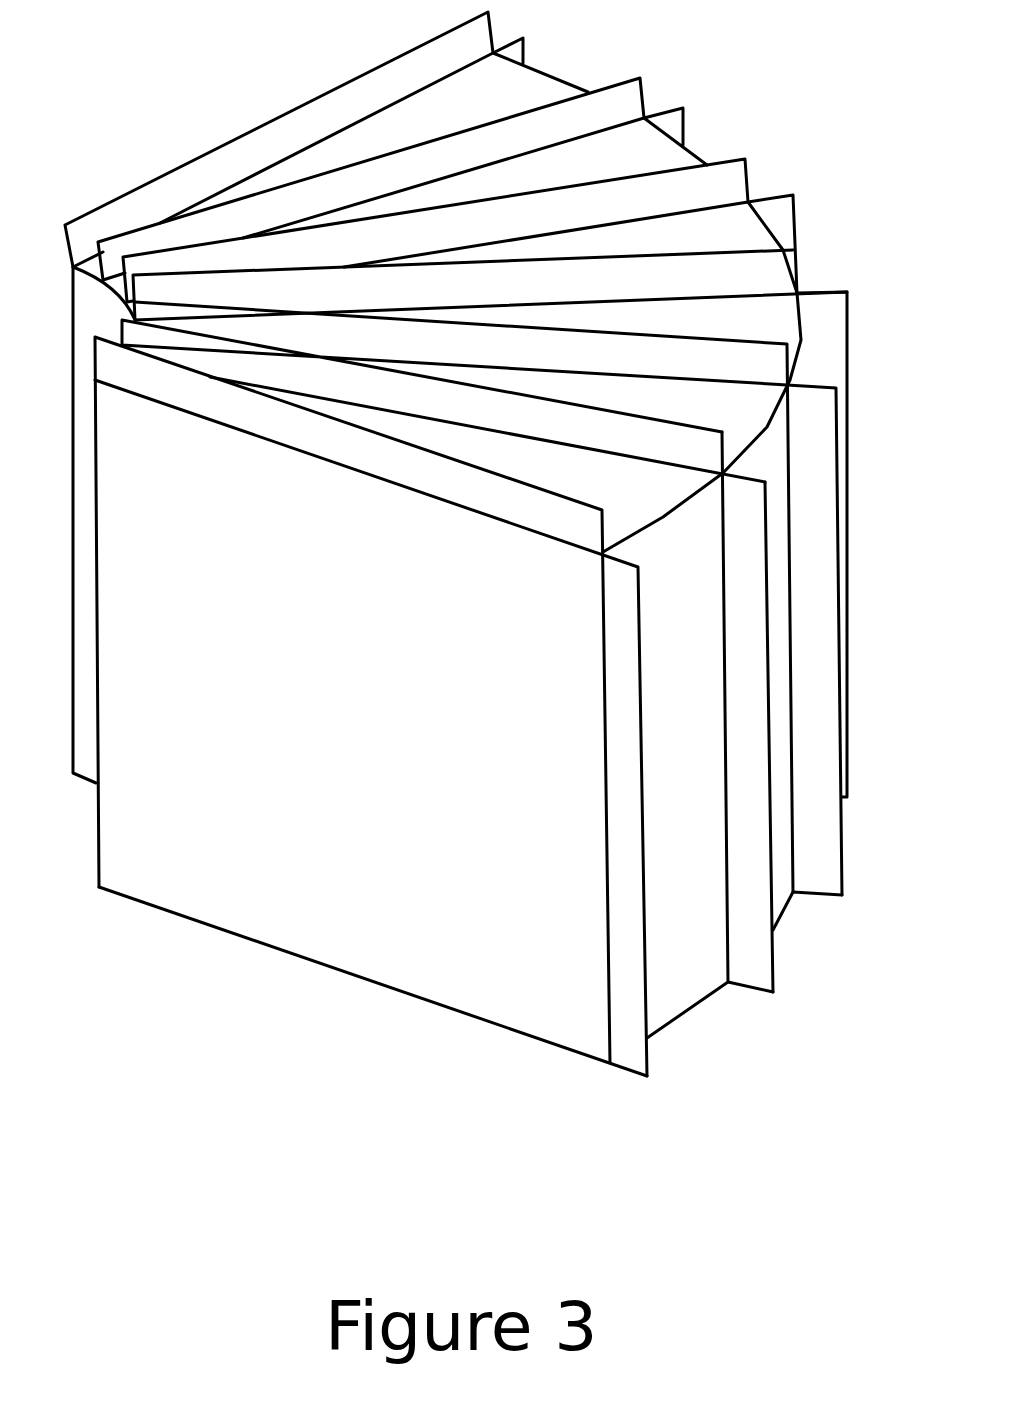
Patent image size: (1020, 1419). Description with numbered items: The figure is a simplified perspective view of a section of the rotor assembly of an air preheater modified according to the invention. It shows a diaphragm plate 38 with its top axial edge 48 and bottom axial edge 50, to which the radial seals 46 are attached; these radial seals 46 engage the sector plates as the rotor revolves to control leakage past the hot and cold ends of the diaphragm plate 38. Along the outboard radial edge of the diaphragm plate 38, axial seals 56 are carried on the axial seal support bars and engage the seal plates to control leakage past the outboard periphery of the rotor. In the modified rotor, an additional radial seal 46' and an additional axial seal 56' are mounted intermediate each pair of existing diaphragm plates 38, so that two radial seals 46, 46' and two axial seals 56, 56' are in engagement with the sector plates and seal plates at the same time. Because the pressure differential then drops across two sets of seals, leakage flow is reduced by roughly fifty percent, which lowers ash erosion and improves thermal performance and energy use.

The diaphragm plate 38 is at (290, 777).
The radial seal 46 is at (433, 397).
The additional radial seal 46' is at (472, 346).
The top axial edge 48 is at (430, 726).
The bottom axial edge 50 is at (470, 981).
The axial seal 56 is at (654, 637).
The additional axial seal 56' is at (627, 668).